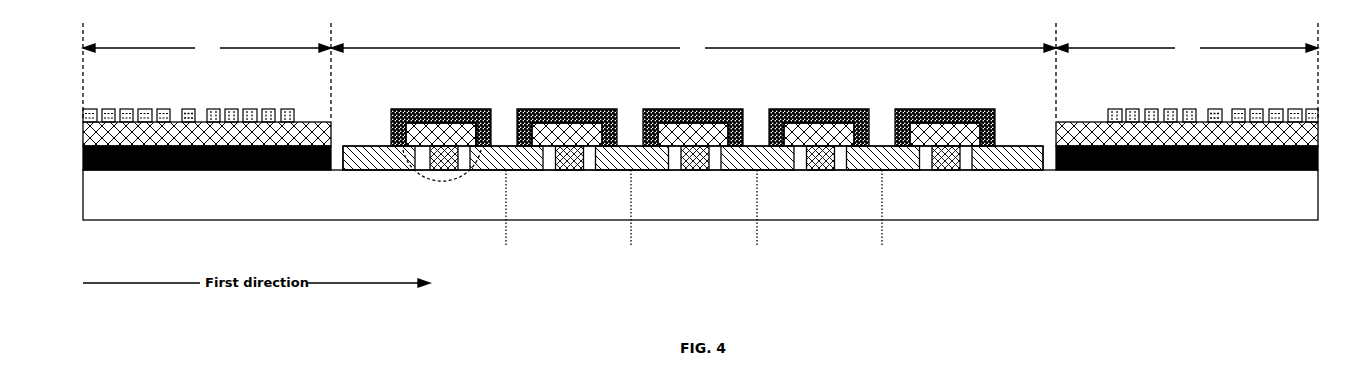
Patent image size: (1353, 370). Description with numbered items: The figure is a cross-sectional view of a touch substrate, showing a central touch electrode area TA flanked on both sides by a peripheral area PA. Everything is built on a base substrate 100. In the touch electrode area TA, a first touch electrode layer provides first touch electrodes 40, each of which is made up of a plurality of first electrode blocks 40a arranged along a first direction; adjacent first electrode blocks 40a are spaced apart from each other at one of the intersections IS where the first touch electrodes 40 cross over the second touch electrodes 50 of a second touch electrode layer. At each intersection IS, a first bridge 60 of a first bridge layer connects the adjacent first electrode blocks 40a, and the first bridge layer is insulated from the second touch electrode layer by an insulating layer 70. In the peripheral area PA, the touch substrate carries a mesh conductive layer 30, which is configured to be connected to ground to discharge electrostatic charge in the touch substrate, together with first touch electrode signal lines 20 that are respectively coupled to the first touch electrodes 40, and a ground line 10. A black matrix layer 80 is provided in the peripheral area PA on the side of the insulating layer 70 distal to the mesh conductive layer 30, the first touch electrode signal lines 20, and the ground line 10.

The ground line 10 is at (1215, 109).
The first touch electrode signal lines 20 is at (1153, 88).
The mesh conductive layer 30 is at (1275, 88).
The first touch electrodes 40 is at (382, 170).
The first electrode blocks 40a is at (693, 158).
The second touch electrodes 50 is at (695, 158).
The first bridges 60 is at (948, 108).
The insulating layer 70 is at (700, 134).
The black matrix layer 80 is at (700, 158).
The base substrate 100 is at (700, 195).
The intersections IS is at (479, 121).
The peripheral area PA is at (700, 47).
The touch electrode area TA is at (693, 47).